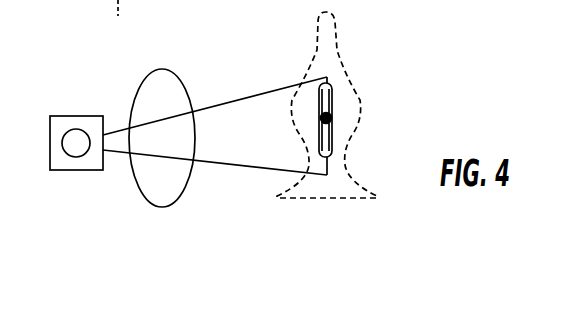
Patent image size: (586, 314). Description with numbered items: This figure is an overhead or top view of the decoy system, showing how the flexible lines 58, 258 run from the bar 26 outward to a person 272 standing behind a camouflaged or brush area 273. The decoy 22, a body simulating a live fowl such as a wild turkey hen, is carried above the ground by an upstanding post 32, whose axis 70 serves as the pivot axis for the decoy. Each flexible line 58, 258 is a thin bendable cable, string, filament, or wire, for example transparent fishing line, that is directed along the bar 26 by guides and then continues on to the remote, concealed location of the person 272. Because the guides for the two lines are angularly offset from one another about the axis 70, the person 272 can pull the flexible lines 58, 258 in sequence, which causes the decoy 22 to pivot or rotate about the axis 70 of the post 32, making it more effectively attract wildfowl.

The decoy 22 is at (356, 80).
The bar 26 is at (333, 103).
The upstanding post 32 is at (333, 121).
The flexible line 58 is at (245, 98).
The flexible line 258 is at (243, 166).
The person 272 is at (84, 116).
The camouflaged or brush area 273 is at (183, 85).
The axis 70 is at (86, 0).